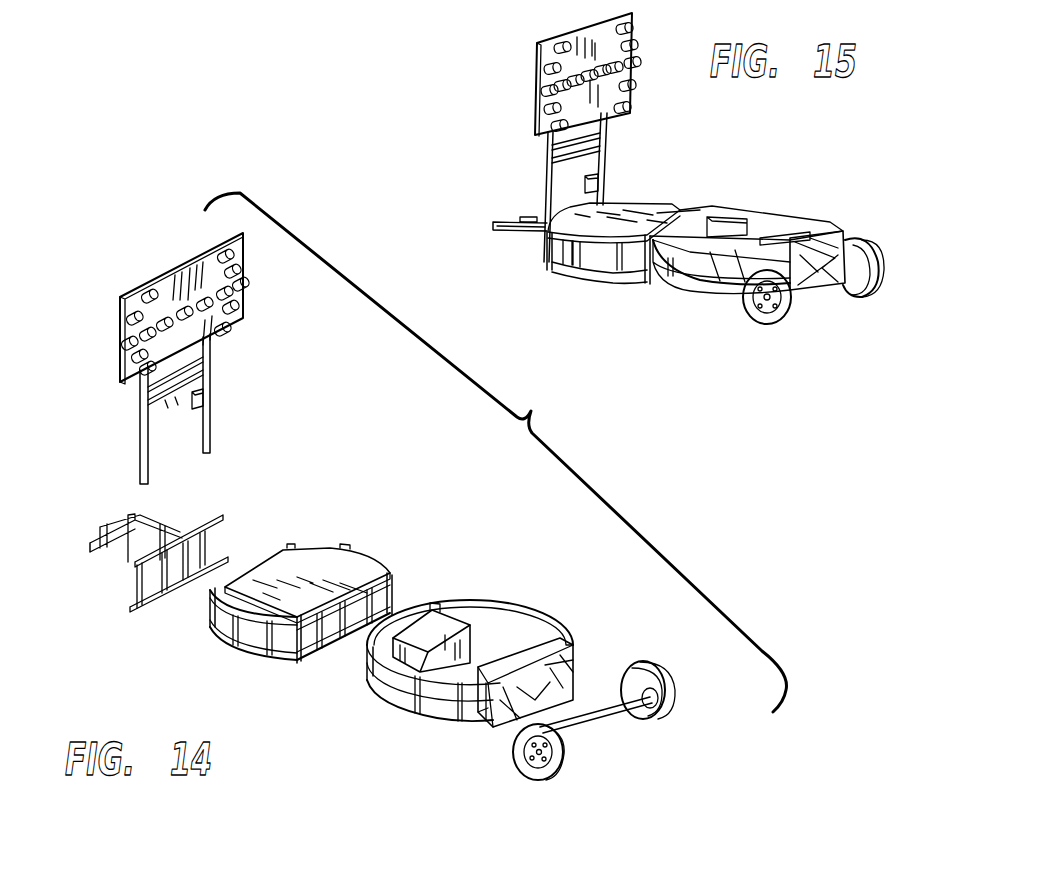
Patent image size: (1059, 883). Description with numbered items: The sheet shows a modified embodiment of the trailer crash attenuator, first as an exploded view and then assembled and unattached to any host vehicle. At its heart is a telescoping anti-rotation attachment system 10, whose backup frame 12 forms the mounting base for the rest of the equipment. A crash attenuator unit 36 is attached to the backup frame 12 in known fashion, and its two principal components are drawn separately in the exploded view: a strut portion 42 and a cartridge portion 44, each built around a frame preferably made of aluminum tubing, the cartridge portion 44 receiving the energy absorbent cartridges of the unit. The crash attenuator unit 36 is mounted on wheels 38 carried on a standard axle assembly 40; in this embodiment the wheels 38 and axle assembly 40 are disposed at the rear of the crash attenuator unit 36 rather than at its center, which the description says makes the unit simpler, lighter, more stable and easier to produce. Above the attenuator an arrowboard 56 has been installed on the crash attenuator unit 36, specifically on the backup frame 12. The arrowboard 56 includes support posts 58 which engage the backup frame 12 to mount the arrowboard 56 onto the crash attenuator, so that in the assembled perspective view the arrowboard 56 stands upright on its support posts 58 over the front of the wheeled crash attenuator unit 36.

In FIG. 15, the telescoping anti-rotation attachment system 10 is at (514, 229).
In FIG. 14, the telescoping anti-rotation attachment system 10 is at (116, 554).
In FIG. 14, the backup frame 12 is at (227, 514).
In FIG. 15, the crash attenuator unit 36 is at (697, 203).
In FIG. 15, the wheels 38 is at (785, 316).
In FIG. 14, the wheels 38 is at (668, 700).
In FIG. 14, the axle assembly 40 is at (592, 735).
In FIG. 14, the strut portion 42 is at (370, 558).
In FIG. 15, the cartridge portion 44 is at (690, 296).
In FIG. 14, the cartridge portion 44 is at (520, 608).
In FIG. 15, the arrowboard 56 is at (536, 66).
In FIG. 14, the arrowboard 56 is at (164, 268).
In FIG. 14, the support posts 58 is at (140, 462).